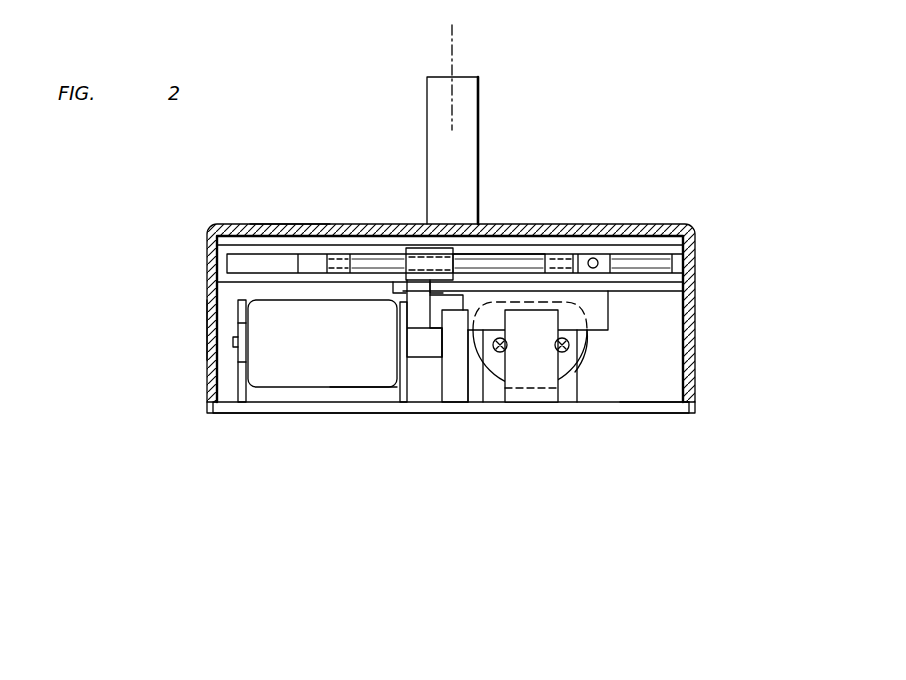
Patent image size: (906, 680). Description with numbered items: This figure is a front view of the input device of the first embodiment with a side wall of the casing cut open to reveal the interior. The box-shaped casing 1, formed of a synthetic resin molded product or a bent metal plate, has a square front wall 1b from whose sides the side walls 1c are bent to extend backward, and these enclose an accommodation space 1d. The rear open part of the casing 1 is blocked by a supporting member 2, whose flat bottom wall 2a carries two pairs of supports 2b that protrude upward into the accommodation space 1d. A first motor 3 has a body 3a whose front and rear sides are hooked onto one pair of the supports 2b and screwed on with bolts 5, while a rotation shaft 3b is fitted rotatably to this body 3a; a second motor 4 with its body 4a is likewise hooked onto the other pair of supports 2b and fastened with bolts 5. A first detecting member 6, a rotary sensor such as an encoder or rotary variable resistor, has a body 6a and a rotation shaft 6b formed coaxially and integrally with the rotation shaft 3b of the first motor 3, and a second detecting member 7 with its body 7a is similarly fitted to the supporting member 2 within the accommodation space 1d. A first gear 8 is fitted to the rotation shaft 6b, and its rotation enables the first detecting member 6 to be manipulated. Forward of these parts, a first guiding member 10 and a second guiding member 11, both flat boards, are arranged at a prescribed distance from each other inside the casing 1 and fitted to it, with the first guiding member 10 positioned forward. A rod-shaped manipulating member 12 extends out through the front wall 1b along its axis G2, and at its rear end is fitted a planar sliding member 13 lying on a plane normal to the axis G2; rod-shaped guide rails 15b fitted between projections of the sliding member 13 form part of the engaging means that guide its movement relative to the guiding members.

The casing 1 is at (203, 218).
The front wall 1b is at (293, 224).
The side walls 1c is at (207, 330).
The accommodation space 1d is at (673, 385).
The supporting member 2 is at (320, 416).
The bottom wall 2a is at (650, 410).
The supports 2b is at (243, 385).
The first motor 3 is at (281, 389).
The body 3a is at (367, 372).
The rotation shaft 3b is at (237, 335).
The second motor 4 is at (594, 345).
The body 4a is at (590, 362).
The bolts 5 is at (500, 352).
The first detecting member 6 is at (455, 396).
The body 6a is at (468, 395).
The rotation shaft 6b is at (432, 357).
The second detecting member 7 is at (541, 400).
The body 7a is at (527, 398).
The first gear 8 is at (422, 357).
The first guiding member 10 is at (660, 248).
The second guiding member 11 is at (680, 277).
The manipulating member 12 is at (478, 108).
The sliding member 13 is at (511, 261).
The guide rails 15b is at (597, 258).
The axis of the manipulating member G2 is at (457, 37).